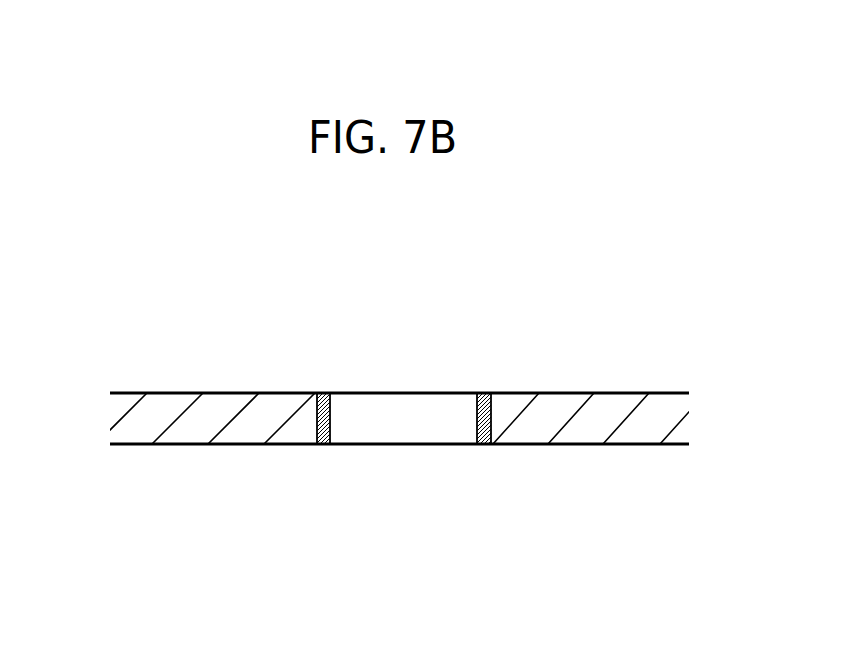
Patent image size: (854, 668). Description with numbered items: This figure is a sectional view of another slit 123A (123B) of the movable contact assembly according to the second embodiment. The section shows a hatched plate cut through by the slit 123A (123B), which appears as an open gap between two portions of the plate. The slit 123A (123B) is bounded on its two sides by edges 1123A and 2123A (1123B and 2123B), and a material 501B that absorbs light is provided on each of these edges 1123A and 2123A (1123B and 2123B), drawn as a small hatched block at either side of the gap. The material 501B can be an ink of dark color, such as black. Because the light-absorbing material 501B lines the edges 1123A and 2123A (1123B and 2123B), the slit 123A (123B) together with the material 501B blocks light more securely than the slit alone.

The material absorbing light 501B is at (490, 392).
The slit 123A is at (397, 430).
The slit 123B is at (396, 464).
The edge of slit 2123A is at (330, 429).
The edge of slit 2123B is at (244, 488).
The edge of slit 1123A is at (477, 430).
The edge of slit 1123B is at (576, 490).